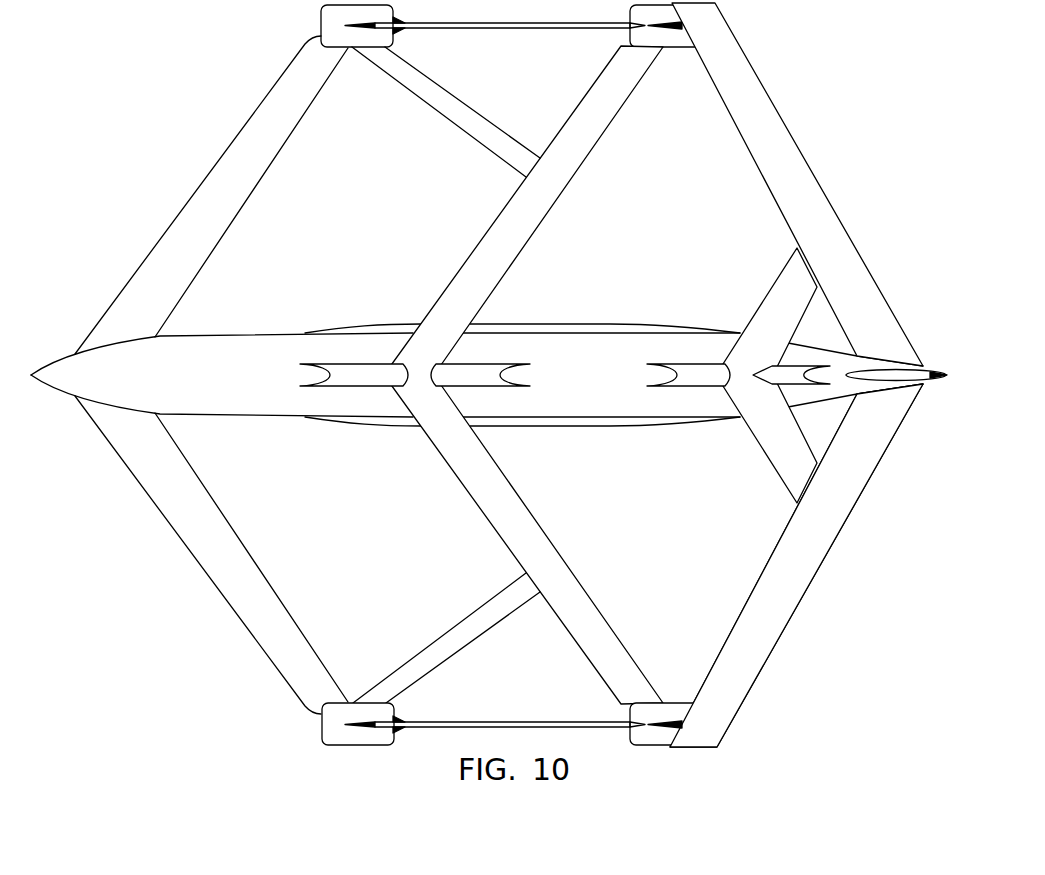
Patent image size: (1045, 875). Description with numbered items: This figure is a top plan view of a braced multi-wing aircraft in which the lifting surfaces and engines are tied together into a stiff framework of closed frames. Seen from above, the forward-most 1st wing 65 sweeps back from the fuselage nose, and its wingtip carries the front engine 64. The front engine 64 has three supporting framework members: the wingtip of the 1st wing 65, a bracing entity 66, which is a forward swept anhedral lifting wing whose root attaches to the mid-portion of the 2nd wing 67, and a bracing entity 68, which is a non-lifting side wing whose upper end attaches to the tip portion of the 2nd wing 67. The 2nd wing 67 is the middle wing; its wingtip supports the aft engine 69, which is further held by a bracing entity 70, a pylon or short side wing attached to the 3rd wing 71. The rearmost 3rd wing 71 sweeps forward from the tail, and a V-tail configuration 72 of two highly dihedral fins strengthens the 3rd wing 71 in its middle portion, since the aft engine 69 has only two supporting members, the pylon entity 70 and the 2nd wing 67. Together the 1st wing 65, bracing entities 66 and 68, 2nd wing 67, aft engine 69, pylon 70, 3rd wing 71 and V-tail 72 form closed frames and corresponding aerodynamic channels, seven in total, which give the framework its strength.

The front engine 64 is at (333, 730).
The 1st wing 65 is at (232, 567).
The bracing entity 66 is at (457, 638).
The 2nd wing 67 is at (490, 513).
The bracing entity 68 is at (518, 722).
The aft engine 69 is at (640, 735).
The bracing entity 70 is at (673, 720).
The 3rd wing 71 is at (762, 607).
The V-tail configuration 72 is at (782, 455).